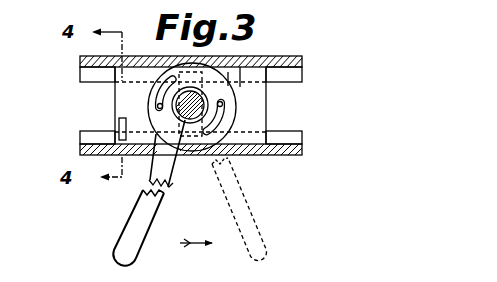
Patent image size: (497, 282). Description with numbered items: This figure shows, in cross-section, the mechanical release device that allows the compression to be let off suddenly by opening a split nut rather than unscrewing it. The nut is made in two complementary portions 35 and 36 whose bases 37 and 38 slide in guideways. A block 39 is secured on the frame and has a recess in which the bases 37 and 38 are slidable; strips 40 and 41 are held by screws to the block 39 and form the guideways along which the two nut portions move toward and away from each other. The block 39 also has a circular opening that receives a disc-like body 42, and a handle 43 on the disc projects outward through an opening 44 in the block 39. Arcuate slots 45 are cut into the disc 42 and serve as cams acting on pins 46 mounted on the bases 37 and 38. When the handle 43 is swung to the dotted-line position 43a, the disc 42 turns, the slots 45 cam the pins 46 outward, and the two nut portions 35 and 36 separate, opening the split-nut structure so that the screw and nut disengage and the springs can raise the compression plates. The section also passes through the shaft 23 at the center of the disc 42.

The shaft 23 is at (205, 92).
The complementary nut portion 35 is at (155, 115).
The complementary nut portion 36 is at (205, 115).
The base 37 is at (116, 84).
The base 38 is at (255, 93).
The block 39 is at (284, 57).
The strip 40 is at (293, 138).
The strip 41 is at (293, 74).
The disc-like body 42 is at (216, 120).
The handle 43 is at (166, 192).
The handle position 43a is at (253, 222).
The opening 44 is at (204, 150).
The arcuate slots 45 is at (157, 96).
The pins 46 is at (122, 107).